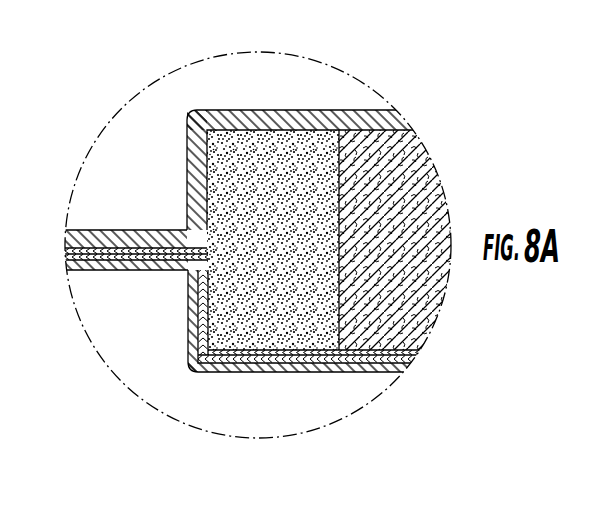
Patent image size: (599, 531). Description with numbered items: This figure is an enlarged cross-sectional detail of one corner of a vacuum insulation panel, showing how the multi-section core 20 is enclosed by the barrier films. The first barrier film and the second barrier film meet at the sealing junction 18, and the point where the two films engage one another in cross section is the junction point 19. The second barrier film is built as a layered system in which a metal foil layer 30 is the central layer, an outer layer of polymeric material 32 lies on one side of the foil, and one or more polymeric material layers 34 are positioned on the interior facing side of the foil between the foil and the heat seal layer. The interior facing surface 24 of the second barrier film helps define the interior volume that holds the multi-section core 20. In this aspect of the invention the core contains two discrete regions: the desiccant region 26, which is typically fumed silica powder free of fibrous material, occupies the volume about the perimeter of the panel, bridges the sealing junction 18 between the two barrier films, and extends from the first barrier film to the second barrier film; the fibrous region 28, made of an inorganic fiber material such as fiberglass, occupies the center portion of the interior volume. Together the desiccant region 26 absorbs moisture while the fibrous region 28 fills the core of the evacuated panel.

The sealing junction 18 is at (122, 248).
The junction point 19 is at (190, 268).
The multi-section core 20 is at (278, 156).
The interior facing surface 24 is at (234, 324).
The desiccant region 26 is at (290, 328).
The fibrous region 28 is at (397, 215).
The metal foil layer 30 is at (332, 356).
The polymeric material 32 is at (232, 322).
The polymeric material layers 34 is at (416, 342).